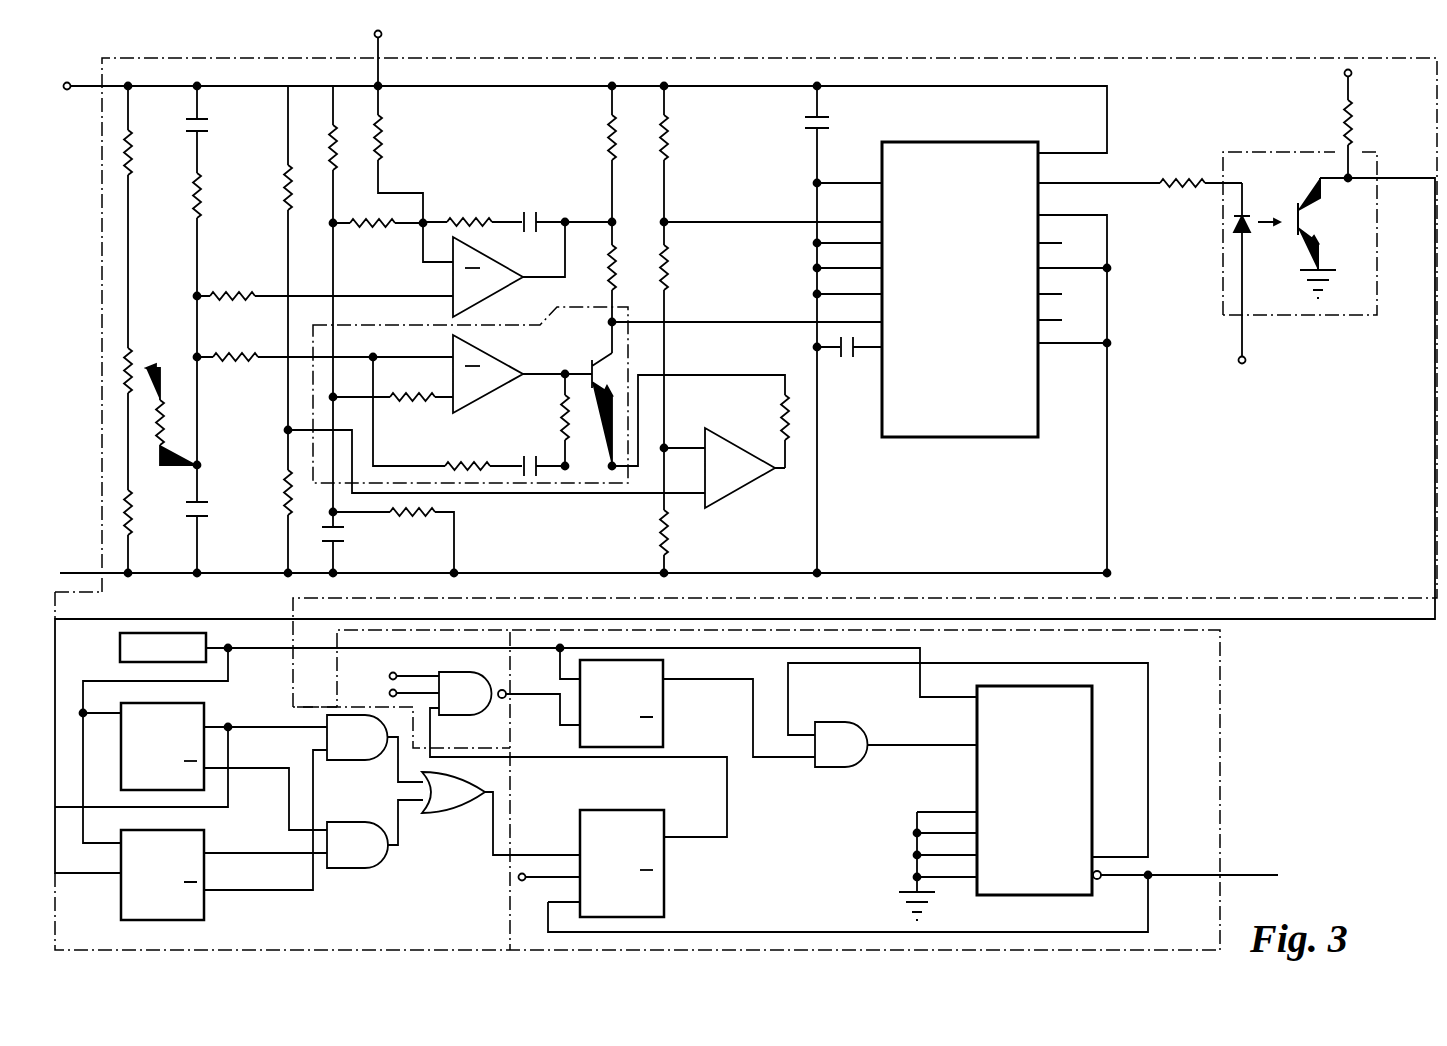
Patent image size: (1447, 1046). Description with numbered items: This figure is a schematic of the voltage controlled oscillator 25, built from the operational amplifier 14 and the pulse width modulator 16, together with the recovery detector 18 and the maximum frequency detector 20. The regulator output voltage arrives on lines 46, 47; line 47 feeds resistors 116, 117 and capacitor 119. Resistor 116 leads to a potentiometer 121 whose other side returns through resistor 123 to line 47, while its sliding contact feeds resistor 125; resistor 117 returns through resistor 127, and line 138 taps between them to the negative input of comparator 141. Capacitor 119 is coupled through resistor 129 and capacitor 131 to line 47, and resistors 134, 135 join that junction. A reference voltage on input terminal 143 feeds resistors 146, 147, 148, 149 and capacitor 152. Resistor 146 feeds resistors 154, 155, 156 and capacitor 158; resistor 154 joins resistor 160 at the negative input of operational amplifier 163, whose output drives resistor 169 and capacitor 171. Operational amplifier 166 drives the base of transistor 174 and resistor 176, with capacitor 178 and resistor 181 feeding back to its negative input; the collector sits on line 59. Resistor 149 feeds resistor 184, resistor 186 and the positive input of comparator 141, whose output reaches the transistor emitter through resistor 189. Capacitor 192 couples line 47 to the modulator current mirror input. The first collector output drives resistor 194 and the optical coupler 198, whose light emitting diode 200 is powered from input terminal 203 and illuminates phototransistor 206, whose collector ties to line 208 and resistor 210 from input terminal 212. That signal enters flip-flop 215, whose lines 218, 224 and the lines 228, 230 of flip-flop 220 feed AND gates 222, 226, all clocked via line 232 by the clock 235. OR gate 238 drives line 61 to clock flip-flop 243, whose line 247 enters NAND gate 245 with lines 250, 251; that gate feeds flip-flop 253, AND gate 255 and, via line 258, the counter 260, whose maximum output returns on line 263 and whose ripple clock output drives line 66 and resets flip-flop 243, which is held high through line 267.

The operational amplifier 14 is at (548, 310).
The pulse width modulator 16 is at (965, 142).
The recovery detector 18 is at (337, 700).
The maximum frequency detector 20 is at (1220, 720).
The voltage controlled oscillator 25 is at (1355, 609).
The line 46 is at (85, 90).
The line 47 is at (80, 573).
The line 59 is at (710, 322).
The line 61 is at (490, 842).
The line 66 is at (1238, 875).
The resistor 116 is at (133, 135).
The resistor 117 is at (283, 185).
The capacitor 119 is at (200, 116).
The potentiometer 121 is at (133, 352).
The resistor 123 is at (135, 520).
The resistor 125 is at (165, 405).
The resistor 127 is at (283, 520).
The resistor 129 is at (190, 205).
The capacitor 131 is at (203, 500).
The resistor 134 is at (230, 290).
The resistor 135 is at (238, 365).
The line 138 is at (515, 497).
The comparator 141 is at (730, 495).
The input terminal 143 is at (384, 36).
The resistor 146 is at (328, 133).
The resistor 147 is at (383, 125).
The resistor 148 is at (607, 125).
The resistor 149 is at (669, 125).
The capacitor 152 is at (810, 115).
The resistor 154 is at (365, 232).
The resistor 155 is at (410, 405).
The resistor 156 is at (410, 520).
The capacitor 158 is at (340, 525).
The resistor 160 is at (470, 216).
The operational amplifier 163 is at (485, 262).
The operational amplifier 166 is at (482, 352).
The resistor 169 is at (617, 250).
The capacitor 171 is at (525, 210).
The transistor 174 is at (588, 360).
The resistor 176 is at (558, 412).
The capacitor 178 is at (521, 455).
The resistor 181 is at (468, 455).
The resistor 184 is at (669, 262).
The resistor 186 is at (659, 530).
The resistor 189 is at (780, 402).
The capacitor 192 is at (835, 358).
The resistor 194 is at (1175, 183).
The optical coupler 198 is at (1223, 298).
The light emitting diode 200 is at (1232, 225).
The input terminal 203 is at (1247, 358).
The phototransistor 206 is at (1290, 205).
The line 208 is at (1435, 318).
The resistor 210 is at (1355, 110).
The input terminal 212 is at (1342, 80).
The flip-flop 215 is at (204, 708).
The line 218 is at (252, 732).
The flip-flop 220 is at (121, 900).
The AND gate 222 is at (370, 762).
The line 224 is at (258, 775).
The AND gate 226 is at (365, 822).
The line 228 is at (232, 853).
The line 230 is at (230, 893).
The line 232 is at (212, 650).
The clock 235 is at (210, 640).
The OR gate 238 is at (445, 812).
The flip-flop 243 is at (664, 862).
The NAND gate 245 is at (478, 705).
The line 247 is at (705, 830).
The line 250 is at (412, 675).
The line 251 is at (390, 690).
The flip-flop 253 is at (664, 703).
The AND gate 255 is at (840, 768).
The line 258 is at (918, 725).
The counter 260 is at (1000, 803).
The line 263 is at (1148, 800).
The line 267 is at (515, 880).